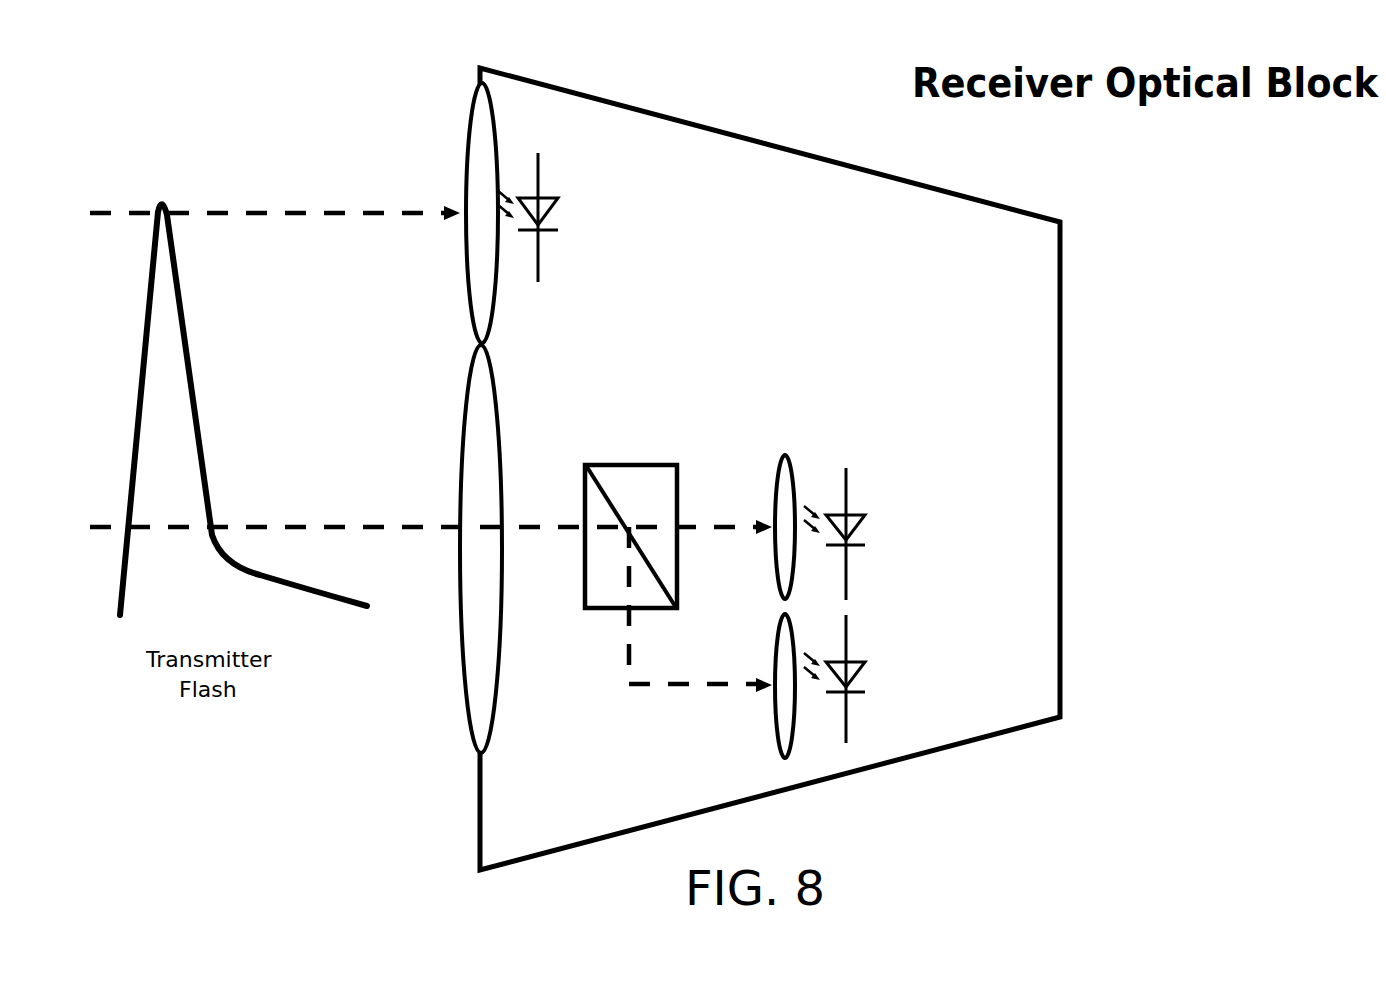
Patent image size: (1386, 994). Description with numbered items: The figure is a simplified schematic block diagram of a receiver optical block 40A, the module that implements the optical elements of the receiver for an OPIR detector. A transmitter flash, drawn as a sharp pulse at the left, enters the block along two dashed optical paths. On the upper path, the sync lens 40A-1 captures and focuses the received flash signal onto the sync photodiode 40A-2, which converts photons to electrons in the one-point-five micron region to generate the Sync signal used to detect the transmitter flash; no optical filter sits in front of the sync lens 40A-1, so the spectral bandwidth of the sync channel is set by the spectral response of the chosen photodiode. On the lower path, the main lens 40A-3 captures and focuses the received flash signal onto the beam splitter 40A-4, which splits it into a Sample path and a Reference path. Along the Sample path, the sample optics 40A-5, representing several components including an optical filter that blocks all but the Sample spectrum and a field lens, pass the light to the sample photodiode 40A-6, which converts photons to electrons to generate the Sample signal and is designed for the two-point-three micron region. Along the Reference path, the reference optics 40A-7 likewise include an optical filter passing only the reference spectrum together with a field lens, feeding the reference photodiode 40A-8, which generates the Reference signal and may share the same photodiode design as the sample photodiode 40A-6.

The receiver optical block 40A is at (796, 94).
The sync lens 40A-1 is at (465, 150).
The sync photodiode 40A-2 is at (577, 180).
The main lens 40A-3 is at (465, 435).
The beam splitter 40A-4 is at (627, 465).
The sample optics 40A-5 is at (785, 455).
The sample photodiode 40A-6 is at (865, 508).
The reference optics 40A-7 is at (775, 708).
The reference photodiode 40A-8 is at (873, 657).